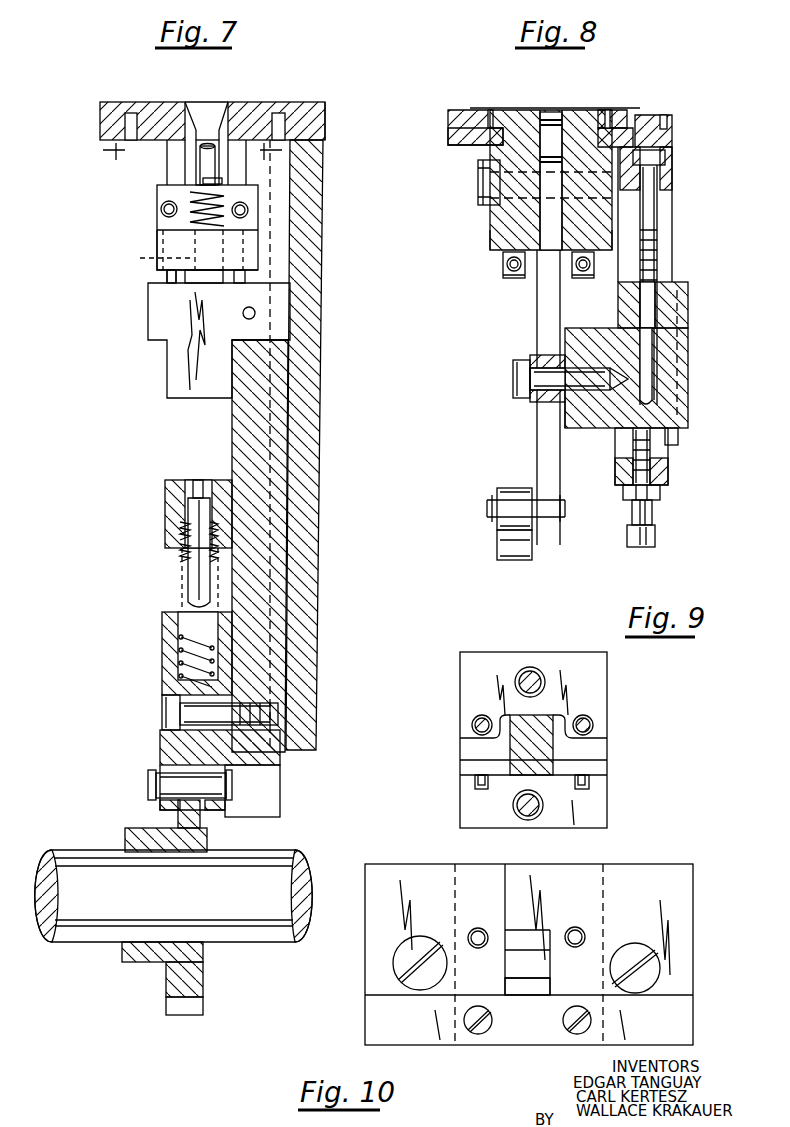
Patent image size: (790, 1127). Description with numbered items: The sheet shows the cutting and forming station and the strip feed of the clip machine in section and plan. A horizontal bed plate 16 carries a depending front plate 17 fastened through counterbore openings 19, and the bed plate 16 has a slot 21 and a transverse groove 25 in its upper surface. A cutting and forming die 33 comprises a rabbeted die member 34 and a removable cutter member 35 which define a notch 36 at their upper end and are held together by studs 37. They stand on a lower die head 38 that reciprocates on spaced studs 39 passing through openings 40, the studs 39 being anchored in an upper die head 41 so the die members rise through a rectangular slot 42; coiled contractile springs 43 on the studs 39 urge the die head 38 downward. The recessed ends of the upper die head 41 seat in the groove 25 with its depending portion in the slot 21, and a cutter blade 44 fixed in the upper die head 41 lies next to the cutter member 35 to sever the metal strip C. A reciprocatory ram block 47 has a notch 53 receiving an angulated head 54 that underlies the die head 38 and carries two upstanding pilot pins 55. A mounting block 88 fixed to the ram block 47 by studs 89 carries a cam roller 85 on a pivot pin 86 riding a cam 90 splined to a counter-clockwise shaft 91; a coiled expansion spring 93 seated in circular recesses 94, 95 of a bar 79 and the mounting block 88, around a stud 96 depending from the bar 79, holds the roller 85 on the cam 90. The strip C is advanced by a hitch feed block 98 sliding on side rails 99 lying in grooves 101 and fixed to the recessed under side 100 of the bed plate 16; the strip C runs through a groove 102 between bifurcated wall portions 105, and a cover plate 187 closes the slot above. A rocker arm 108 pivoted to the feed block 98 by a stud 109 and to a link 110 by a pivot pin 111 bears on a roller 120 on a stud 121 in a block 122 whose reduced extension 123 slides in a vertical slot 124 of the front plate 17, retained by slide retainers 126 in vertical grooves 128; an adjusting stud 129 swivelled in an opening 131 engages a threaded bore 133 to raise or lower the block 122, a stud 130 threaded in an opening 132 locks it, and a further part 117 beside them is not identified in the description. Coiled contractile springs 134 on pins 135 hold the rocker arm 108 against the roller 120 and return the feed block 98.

In FIG. 7, the bed plate 16 is at (305, 131).
In FIG. 7, the front plate 17 is at (310, 184).
In FIG. 7, the counterbore openings 19 is at (195, 156).
In FIG. 7, the slot 21 is at (272, 122).
In FIG. 7, the groove 25 is at (290, 108).
In FIG. 7, the cutting and forming die 33 is at (188, 168).
In FIG. 9, the cutting and forming die 33 is at (444, 682).
In FIG. 10, the cutting and forming die 33 is at (412, 858).
In FIG. 9, the rabbeted die member 34 is at (460, 748).
In FIG. 10, the rabbeted die member 34 is at (505, 870).
In FIG. 7, the removable cutter member 35 is at (206, 128).
In FIG. 9, the removable cutter member 35 is at (460, 770).
In FIG. 10, the removable cutter member 35 is at (518, 988).
In FIG. 9, the notch 36 is at (590, 750).
In FIG. 10, the notch 36 is at (528, 955).
In FIG. 7, the studs 37 is at (168, 198).
In FIG. 9, the studs 37 is at (480, 790).
In FIG. 7, the die head 38 is at (165, 240).
In FIG. 7, the studs 39 is at (140, 258).
In FIG. 9, the studs 39 is at (520, 670).
In FIG. 9, the openings 40 is at (535, 668).
In FIG. 7, the upper die head 41 is at (100, 108).
In FIG. 10, the upper die head 41 is at (365, 965).
In FIG. 7, the rectangular slot 42 is at (195, 108).
In FIG. 10, the rectangular slot 42 is at (555, 935).
In FIG. 7, the coiled contractile springs 43 is at (240, 222).
In FIG. 9, the coiled contractile springs 43 is at (542, 672).
In FIG. 10, the cutter blade 44 is at (375, 1022).
In FIG. 7, the ram block 47 is at (275, 600).
In FIG. 7, the notch 53 is at (262, 345).
In FIG. 7, the angulated head 54 is at (280, 312).
In FIG. 7, the pilot pins 55 is at (162, 274).
In FIG. 9, the pilot pins 55 is at (472, 722).
In FIG. 10, the pilot pins 55 is at (476, 930).
In FIG. 7, the bar 79 is at (172, 492).
In FIG. 7, the cam roller 85 is at (178, 815).
In FIG. 7, the pivot pin 86 is at (148, 785).
In FIG. 7, the mounting block 88 is at (178, 664).
In FIG. 7, the studs 89 is at (165, 722).
In FIG. 7, the cam 90 is at (128, 838).
In FIG. 7, the shaft 91 is at (96, 922).
In FIG. 7, the coiled expansion spring 93 is at (180, 556).
In FIG. 7, the circular recess 94 is at (180, 528).
In FIG. 7, the circular recess 95 is at (178, 630).
In FIG. 7, the stud 96 is at (188, 590).
In FIG. 8, the hitch feed block 98 is at (600, 108).
In FIG. 8, the side rails 99 is at (470, 140).
In FIG. 8, the recessed under side 100 is at (452, 131).
In FIG. 8, the grooves 101 is at (498, 118).
In FIG. 8, the groove 102 is at (510, 218).
In FIG. 8, the bifurcated wall portions 105 is at (600, 222).
In FIG. 8, the rocker arm 108 is at (540, 318).
In FIG. 8, the stud 109 is at (480, 185).
In FIG. 8, the link 110 is at (497, 540).
In FIG. 8, the pivot pin 111 is at (487, 508).
In FIG. 8, the nut 117 is at (668, 472).
In FIG. 8, the roller 120 is at (535, 358).
In FIG. 8, the stud 121 is at (515, 380).
In FIG. 8, the block 122 is at (565, 418).
In FIG. 8, the reduced extension 123 is at (678, 370).
In FIG. 8, the vertical slot 124 is at (665, 265).
In FIG. 8, the vertical slide retainers 126 is at (680, 436).
In FIG. 8, the vertical grooves 128 is at (690, 396).
In FIG. 8, the adjusting stud 129 is at (650, 200).
In FIG. 8, the adjusting stud 130 is at (652, 512).
In FIG. 8, the opening 131 is at (665, 170).
In FIG. 8, the opening 132 is at (615, 468).
In FIG. 8, the threaded bore 133 is at (655, 310).
In FIG. 8, the coiled contractile springs 134 is at (503, 264).
In FIG. 8, the pins 135 is at (580, 278).
In FIG. 8, the cover plate 187 is at (490, 108).
In FIG. 8, the strip of metal C is at (553, 120).